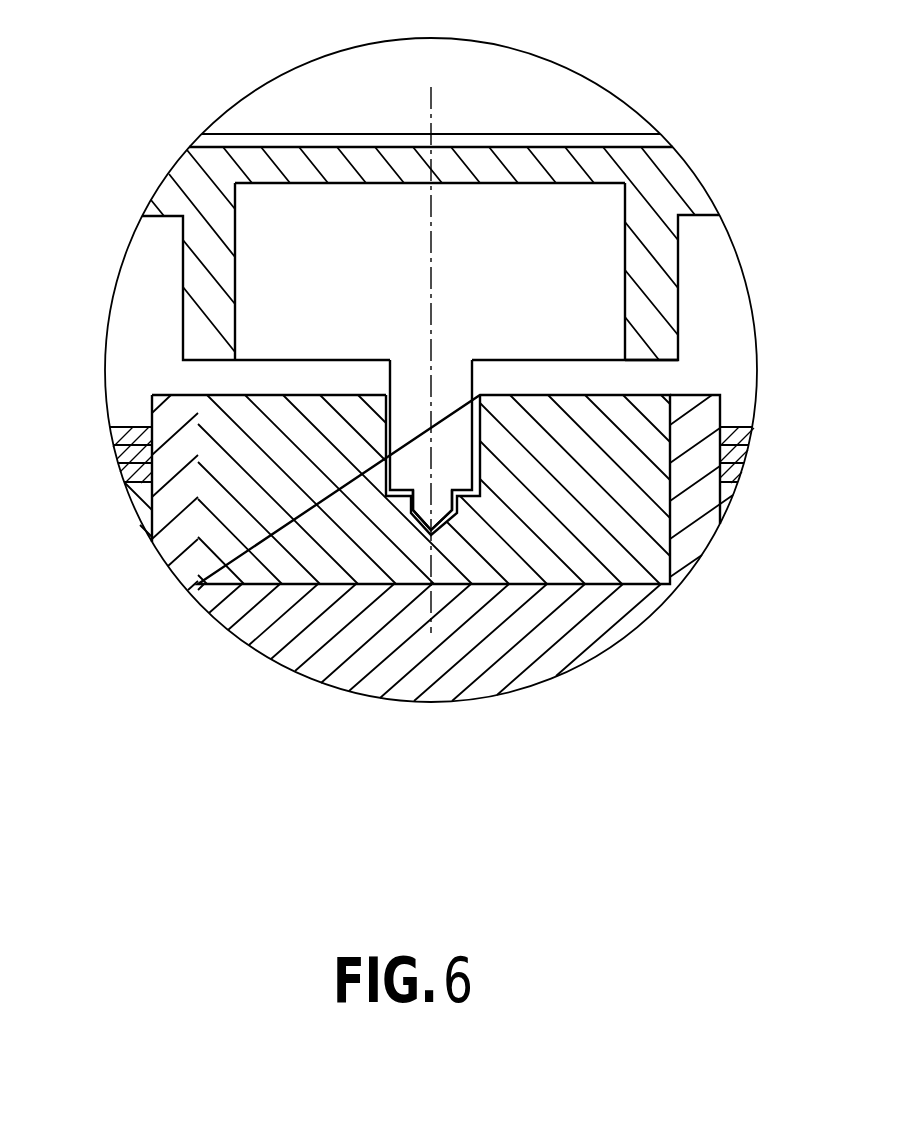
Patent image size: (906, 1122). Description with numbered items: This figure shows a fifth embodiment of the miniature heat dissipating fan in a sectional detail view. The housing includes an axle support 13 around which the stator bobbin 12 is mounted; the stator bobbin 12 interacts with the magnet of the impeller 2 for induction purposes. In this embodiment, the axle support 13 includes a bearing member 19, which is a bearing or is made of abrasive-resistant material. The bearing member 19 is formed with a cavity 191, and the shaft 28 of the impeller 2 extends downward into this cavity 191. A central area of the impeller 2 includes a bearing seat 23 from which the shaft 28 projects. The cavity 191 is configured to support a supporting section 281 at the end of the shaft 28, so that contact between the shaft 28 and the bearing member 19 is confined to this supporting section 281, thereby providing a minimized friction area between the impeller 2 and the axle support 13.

The impeller 2 is at (582, 163).
The bearing seat 23 is at (663, 295).
The shaft 28 is at (410, 407).
The supporting section 281 is at (433, 530).
The bearing member 19 is at (640, 548).
The cavity 191 is at (388, 497).
The axle support 13 is at (720, 530).
The stator bobbin 12 is at (739, 457).